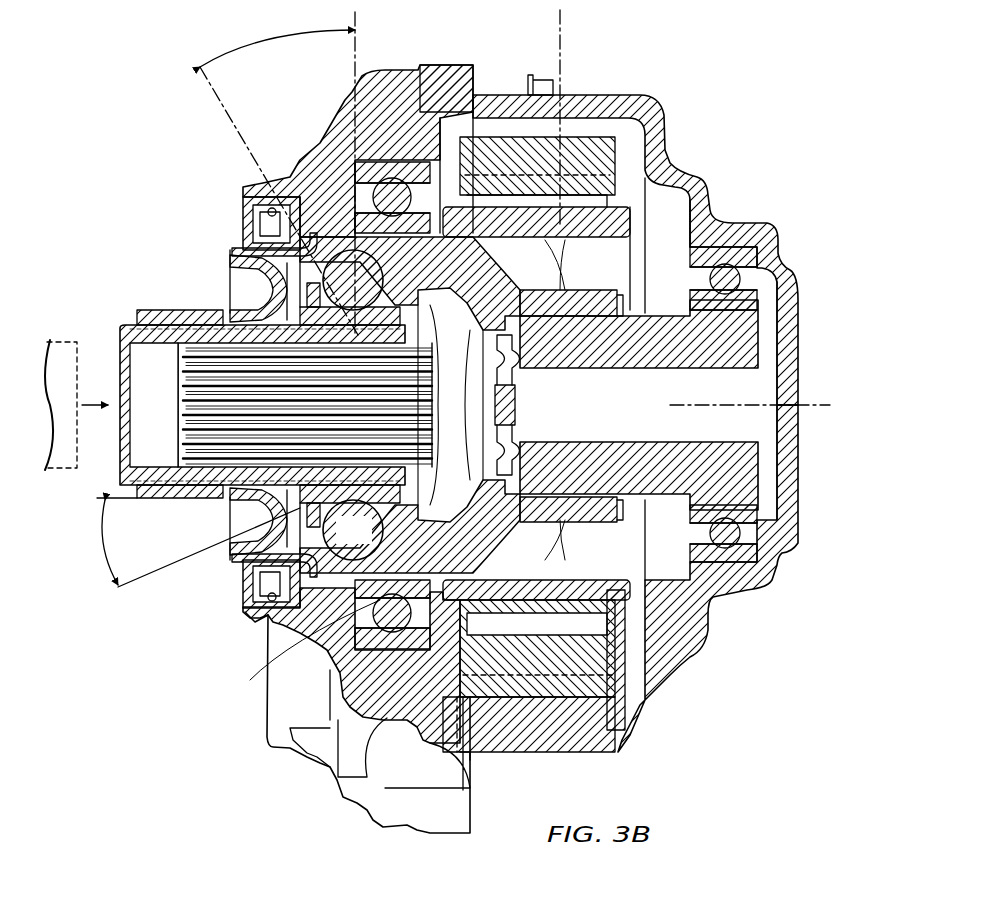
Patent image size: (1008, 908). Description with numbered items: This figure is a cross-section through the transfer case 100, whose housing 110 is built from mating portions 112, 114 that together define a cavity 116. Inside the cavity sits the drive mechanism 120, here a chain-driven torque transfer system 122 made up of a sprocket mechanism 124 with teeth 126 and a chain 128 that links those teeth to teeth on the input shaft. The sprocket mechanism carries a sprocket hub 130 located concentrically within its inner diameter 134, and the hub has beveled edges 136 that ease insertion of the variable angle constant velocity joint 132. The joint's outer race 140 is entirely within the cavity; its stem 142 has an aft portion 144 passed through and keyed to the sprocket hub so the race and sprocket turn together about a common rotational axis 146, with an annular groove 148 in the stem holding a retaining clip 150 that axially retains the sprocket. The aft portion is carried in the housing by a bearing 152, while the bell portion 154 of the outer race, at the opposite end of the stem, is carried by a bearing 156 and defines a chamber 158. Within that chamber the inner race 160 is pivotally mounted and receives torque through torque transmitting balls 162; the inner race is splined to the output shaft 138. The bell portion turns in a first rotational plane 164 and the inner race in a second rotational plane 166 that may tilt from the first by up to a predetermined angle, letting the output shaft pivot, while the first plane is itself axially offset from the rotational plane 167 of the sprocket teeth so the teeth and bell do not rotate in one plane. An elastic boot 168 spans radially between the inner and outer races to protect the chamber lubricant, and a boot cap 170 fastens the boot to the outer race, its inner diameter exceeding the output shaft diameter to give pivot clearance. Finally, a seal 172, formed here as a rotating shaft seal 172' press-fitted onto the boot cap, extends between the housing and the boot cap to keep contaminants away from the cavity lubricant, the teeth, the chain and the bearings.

The transfer case 100 is at (200, 172).
The housing 110 is at (348, 97).
The mating portion 112 is at (450, 66).
The mating portion 114 is at (650, 97).
The cavity 116 is at (452, 128).
The drive mechanism 120 is at (625, 597).
The chain-driven torque transfer system 122 is at (620, 618).
The sprocket mechanism 124 is at (660, 605).
The teeth 126 is at (616, 727).
The chain 128 is at (466, 754).
The sprocket hub 130 is at (622, 293).
The variable angle constant velocity joint 132 is at (212, 241).
The inner diameter 134 is at (700, 565).
The beveled edges 136 is at (612, 502).
The output shaft 138 is at (60, 472).
The outer race 140 is at (275, 665).
The stem 142 is at (777, 347).
The aft portion 144 is at (760, 362).
The common rotational axis 146 is at (806, 408).
The annular groove 148 is at (760, 535).
The retaining clip 150 is at (760, 568).
The bearing 152 is at (740, 247).
The bell portion 154 is at (330, 172).
The bearing 156 is at (345, 152).
The chamber 158 is at (205, 362).
The inner race 160 is at (252, 503).
The torque transmitting balls 162 is at (370, 542).
The first rotational plane 164 is at (300, 270).
The second rotational plane 166 is at (505, 407).
The rotational plane of the teeth 167 is at (560, 52).
The elastic boot 168 is at (245, 537).
The boot cap 170 is at (245, 562).
The seal 172 is at (238, 590).
The rotating shaft seal 172' is at (229, 637).